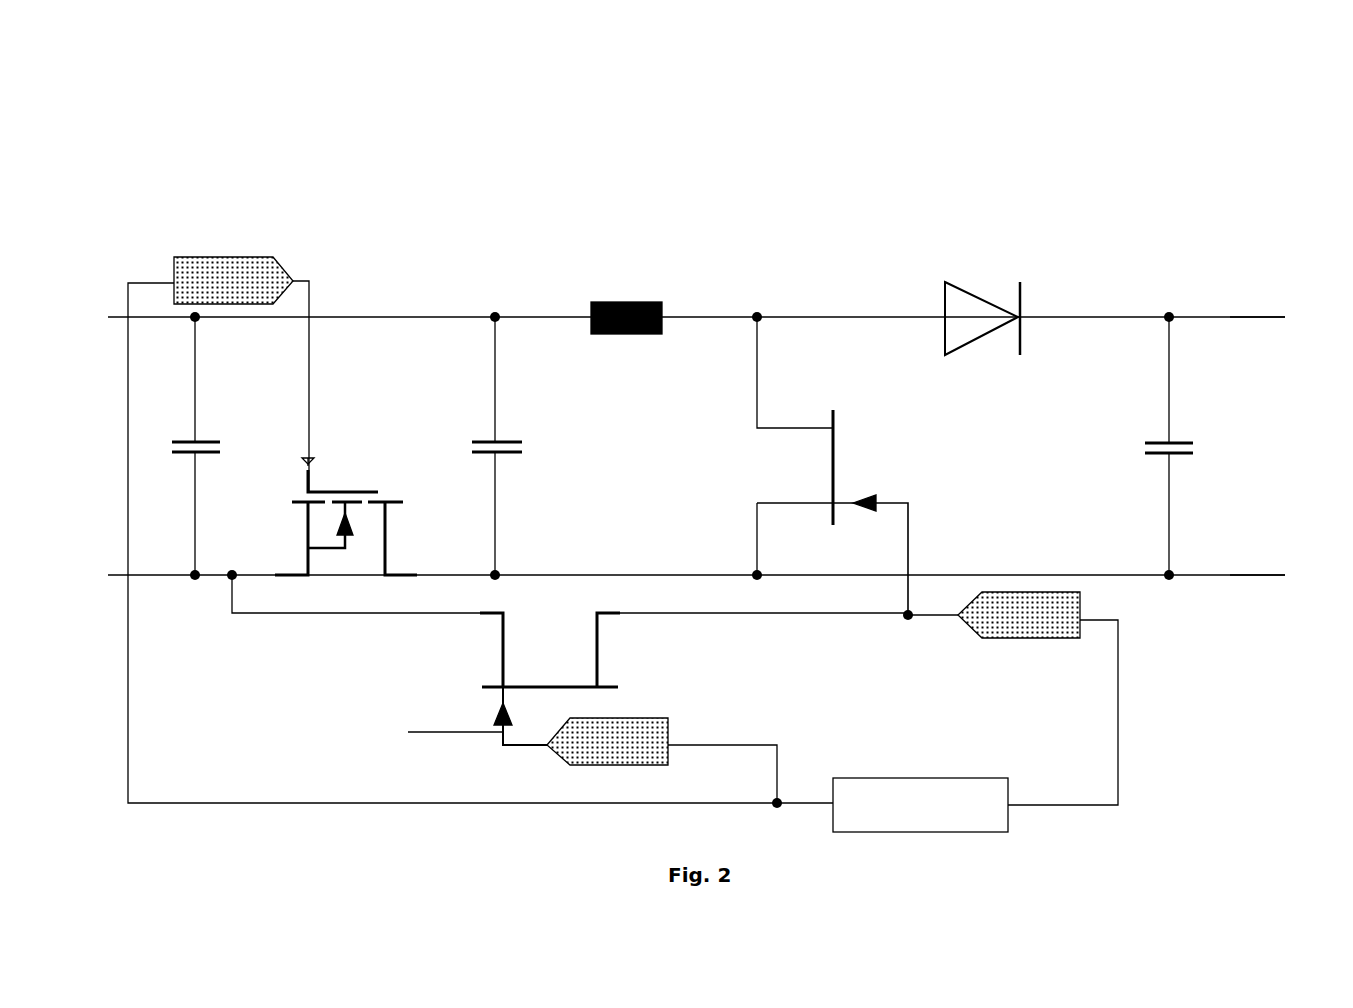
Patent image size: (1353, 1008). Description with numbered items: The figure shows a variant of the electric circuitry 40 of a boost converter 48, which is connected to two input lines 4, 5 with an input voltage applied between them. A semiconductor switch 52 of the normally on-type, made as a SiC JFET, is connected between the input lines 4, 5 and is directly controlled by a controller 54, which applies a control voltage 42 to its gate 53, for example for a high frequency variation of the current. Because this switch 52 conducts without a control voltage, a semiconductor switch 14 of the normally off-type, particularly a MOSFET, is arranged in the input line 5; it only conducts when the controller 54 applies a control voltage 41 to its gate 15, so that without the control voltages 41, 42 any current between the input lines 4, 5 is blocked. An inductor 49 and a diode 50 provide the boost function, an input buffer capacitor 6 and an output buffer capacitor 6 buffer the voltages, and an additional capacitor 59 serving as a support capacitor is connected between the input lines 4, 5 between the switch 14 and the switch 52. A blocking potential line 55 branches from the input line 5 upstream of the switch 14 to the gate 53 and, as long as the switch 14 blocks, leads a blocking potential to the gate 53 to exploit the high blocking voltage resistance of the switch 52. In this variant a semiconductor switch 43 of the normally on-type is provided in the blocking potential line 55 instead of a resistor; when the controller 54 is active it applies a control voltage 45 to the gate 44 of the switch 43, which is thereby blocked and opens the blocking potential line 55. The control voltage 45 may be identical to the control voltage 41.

The input line 4 is at (332, 318).
The input line 5 is at (150, 582).
The buffer capacitor 6 is at (163, 440).
The semiconductor switch of the normally off-type 14 is at (338, 563).
The gate 15 is at (308, 478).
The electric circuitry 40 is at (1277, 261).
The control voltage 41 is at (248, 257).
The control voltage 42 is at (1035, 640).
The semiconductor switch of the normally on-type 43 is at (608, 658).
The gate 44 is at (439, 733).
The control voltage 45 is at (668, 737).
The boost converter 48 is at (853, 246).
The inductor 49 is at (635, 282).
The diode 50 is at (998, 249).
The semiconductor switch of the normally on-type 52 is at (842, 457).
The gate 53 is at (850, 500).
The controller 54 is at (915, 778).
The blocking potential line 55 is at (267, 618).
The capacitor 59 is at (473, 425).